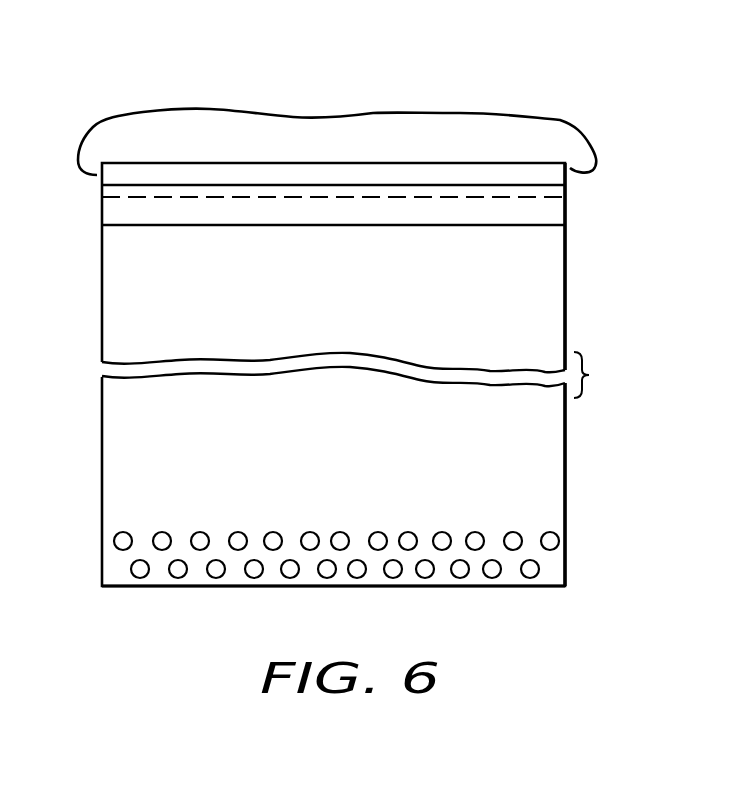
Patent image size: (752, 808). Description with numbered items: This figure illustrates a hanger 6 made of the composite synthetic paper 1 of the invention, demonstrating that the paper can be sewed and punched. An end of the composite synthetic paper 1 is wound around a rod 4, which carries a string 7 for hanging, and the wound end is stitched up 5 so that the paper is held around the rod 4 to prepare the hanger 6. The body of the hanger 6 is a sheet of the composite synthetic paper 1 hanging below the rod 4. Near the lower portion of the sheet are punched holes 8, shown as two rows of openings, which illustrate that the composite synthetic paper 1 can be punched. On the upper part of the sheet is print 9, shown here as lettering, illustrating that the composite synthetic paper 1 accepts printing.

The composite synthetic paper 1 is at (553, 320).
The rod 4 is at (564, 175).
The stitched up portion 5 is at (107, 200).
The hanger 6 is at (180, 91).
The string 7 is at (510, 126).
The punched holes 8 is at (552, 540).
The print 9 is at (243, 307).